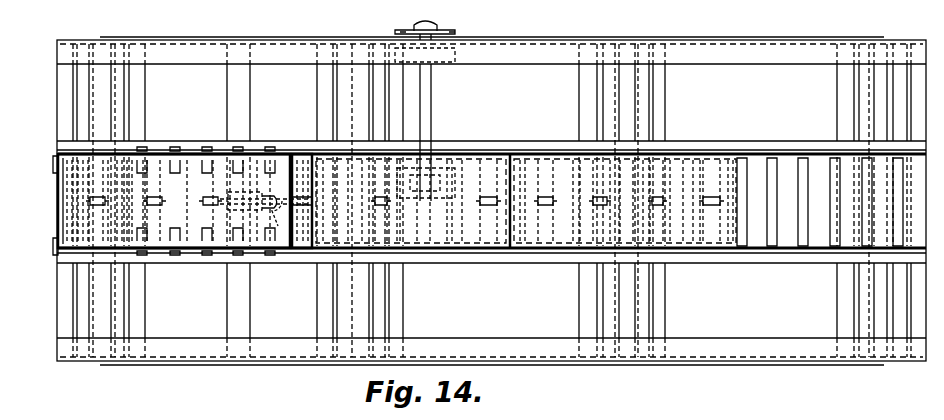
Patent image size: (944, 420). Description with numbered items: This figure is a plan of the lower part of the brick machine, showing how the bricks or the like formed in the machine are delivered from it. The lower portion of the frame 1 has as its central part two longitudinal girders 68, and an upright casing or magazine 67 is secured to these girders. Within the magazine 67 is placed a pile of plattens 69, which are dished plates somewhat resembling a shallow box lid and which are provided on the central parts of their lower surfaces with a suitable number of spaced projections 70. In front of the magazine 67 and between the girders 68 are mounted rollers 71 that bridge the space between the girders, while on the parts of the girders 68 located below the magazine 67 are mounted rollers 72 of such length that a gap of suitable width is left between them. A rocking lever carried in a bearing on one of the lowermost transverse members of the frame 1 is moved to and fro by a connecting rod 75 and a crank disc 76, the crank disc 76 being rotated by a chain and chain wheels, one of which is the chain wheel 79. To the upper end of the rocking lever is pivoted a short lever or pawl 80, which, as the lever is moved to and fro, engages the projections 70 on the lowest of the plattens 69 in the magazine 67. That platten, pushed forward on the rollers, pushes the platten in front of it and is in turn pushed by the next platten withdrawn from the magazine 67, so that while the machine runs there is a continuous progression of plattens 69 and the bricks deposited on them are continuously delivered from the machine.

The frame 1 is at (712, 62).
The upright casing or magazine 67 is at (58, 213).
The longitudinal girders 68 is at (452, 266).
The plattens 69 is at (156, 250).
The spaced projections 70 is at (660, 206).
The rollers 71 is at (804, 158).
The rollers 72 is at (172, 168).
The connecting rod 75 is at (290, 251).
The crank disc 76 is at (438, 132).
The chain wheel 79 is at (440, 30).
The short lever or pawl 80 is at (232, 203).